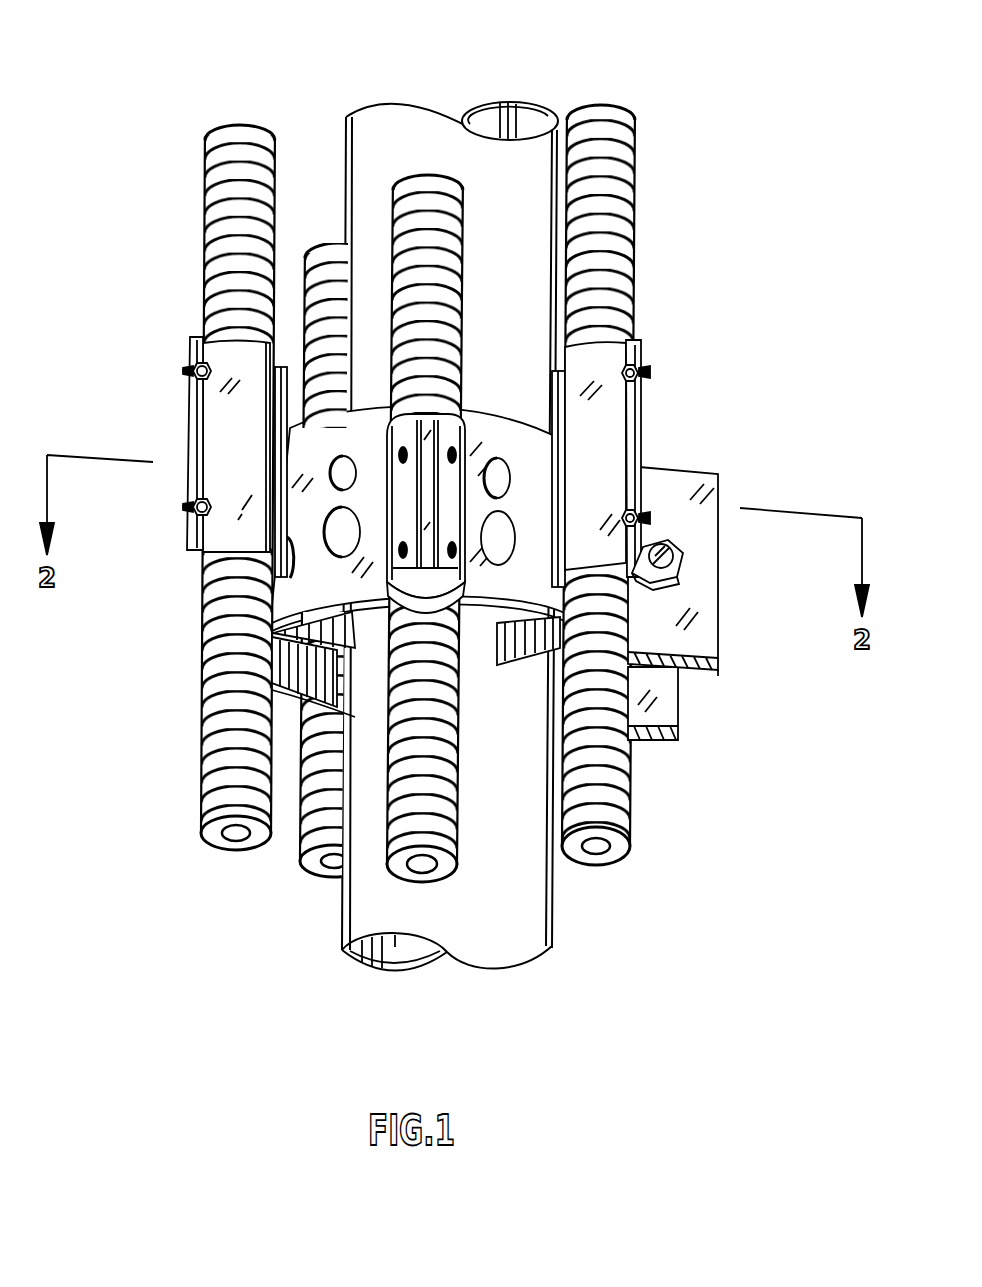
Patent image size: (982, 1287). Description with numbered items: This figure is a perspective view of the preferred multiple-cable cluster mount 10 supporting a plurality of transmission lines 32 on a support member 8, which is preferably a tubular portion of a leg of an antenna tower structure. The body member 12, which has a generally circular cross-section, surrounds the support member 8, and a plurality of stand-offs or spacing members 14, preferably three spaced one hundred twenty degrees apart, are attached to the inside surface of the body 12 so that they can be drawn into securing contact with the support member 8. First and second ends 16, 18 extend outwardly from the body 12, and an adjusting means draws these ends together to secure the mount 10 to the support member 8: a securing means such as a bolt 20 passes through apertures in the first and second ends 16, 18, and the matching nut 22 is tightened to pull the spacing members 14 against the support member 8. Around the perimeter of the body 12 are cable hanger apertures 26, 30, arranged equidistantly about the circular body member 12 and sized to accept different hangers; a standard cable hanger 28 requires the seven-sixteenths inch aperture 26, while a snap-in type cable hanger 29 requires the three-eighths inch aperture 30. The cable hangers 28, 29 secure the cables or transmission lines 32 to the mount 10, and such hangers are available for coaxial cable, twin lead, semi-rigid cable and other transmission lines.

The support member 8 is at (396, 112).
The multiple-cable cluster mount 10 is at (476, 506).
The body member 12 is at (477, 427).
The spacing members 14 is at (355, 624).
The first end 16 is at (664, 708).
The second end 18 is at (718, 475).
The bolt 20 is at (675, 553).
The nut 22 is at (676, 574).
The cable hanger aperture 26 is at (340, 463).
The standard cable hanger 28 is at (210, 353).
The snap-in type cable hanger 29 is at (395, 428).
The cable hanger aperture 30 is at (500, 528).
The transmission line 32 is at (213, 193).